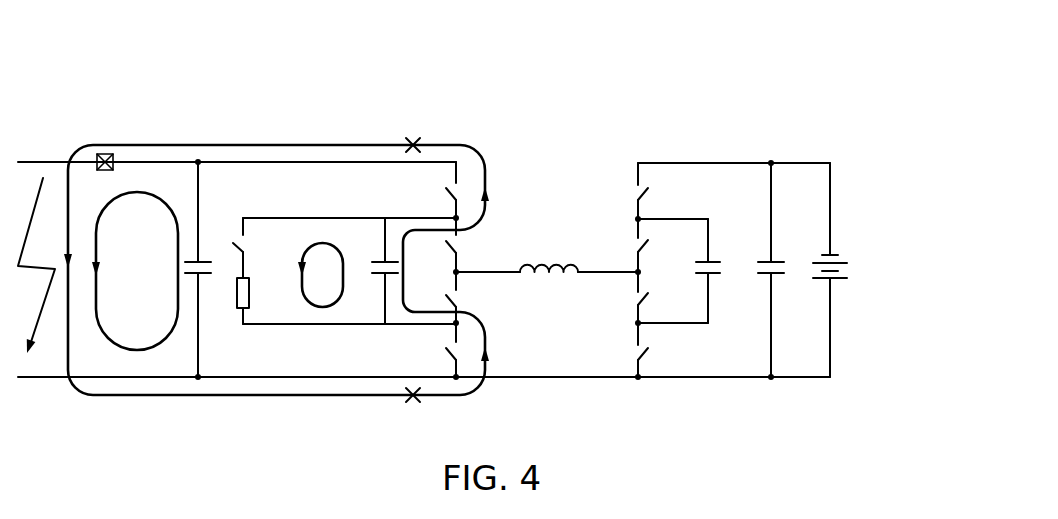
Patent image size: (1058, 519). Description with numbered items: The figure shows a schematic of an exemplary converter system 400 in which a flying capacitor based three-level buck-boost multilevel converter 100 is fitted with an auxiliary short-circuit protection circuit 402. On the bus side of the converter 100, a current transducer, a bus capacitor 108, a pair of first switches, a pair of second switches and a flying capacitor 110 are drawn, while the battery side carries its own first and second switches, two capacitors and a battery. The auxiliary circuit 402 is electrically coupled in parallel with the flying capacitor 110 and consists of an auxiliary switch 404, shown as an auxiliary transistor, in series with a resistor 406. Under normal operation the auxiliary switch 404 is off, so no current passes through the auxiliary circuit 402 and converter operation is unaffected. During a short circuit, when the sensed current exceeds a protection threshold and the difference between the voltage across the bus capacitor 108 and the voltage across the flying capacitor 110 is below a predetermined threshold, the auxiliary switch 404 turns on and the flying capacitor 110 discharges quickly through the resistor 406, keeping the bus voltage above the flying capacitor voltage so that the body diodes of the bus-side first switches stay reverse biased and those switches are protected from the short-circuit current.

The converter system 400 is at (132, 72).
The multilevel converter 100 is at (86, 406).
The bus capacitor 108 is at (192, 263).
The flying capacitor 110 is at (380, 262).
The short-circuit protection circuit 402 is at (234, 222).
The auxiliary switch 404 is at (240, 252).
The resistor 406 is at (250, 300).